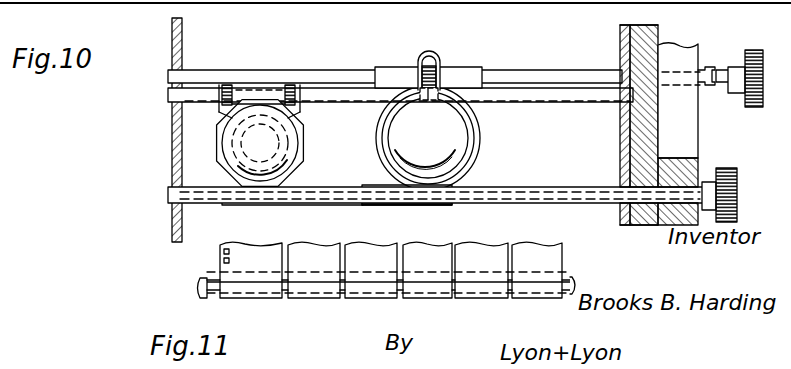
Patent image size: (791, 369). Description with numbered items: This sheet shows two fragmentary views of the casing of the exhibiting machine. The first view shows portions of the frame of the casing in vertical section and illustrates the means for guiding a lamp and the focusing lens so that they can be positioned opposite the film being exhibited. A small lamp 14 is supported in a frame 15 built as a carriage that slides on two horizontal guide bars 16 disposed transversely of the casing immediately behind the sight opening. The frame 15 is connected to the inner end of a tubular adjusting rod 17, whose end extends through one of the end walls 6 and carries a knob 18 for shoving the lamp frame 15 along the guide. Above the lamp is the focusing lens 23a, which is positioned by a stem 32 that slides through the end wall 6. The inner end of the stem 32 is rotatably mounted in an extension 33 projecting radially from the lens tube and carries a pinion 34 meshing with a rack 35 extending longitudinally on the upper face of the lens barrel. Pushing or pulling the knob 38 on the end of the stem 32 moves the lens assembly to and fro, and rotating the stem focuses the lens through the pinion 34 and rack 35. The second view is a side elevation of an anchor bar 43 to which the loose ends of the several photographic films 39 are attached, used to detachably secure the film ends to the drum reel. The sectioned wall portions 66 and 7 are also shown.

In FIG. 10, the end plate 66 is at (175, 107).
In FIG. 10, the lamp 14 is at (235, 142).
In FIG. 10, the frame 15 is at (302, 152).
In FIG. 10, the guide bars 16 is at (368, 192).
In FIG. 10, the stem 32 is at (556, 70).
In FIG. 10, the extension 33 is at (440, 62).
In FIG. 10, the pinion 34 is at (417, 70).
In FIG. 10, the rack 35 is at (430, 98).
In FIG. 10, the focusing lens 23a is at (462, 138).
In FIG. 10, the tubular adjusting rod 17 is at (542, 186).
In FIG. 10, the end wall 6 is at (642, 146).
In FIG. 10, the frame member 7 is at (699, 50).
In FIG. 10, the knob 38 is at (751, 106).
In FIG. 10, the knob 18 is at (724, 174).
In FIG. 11, the photographic films 39 is at (320, 263).
In FIG. 11, the anchor bar 43 is at (198, 284).